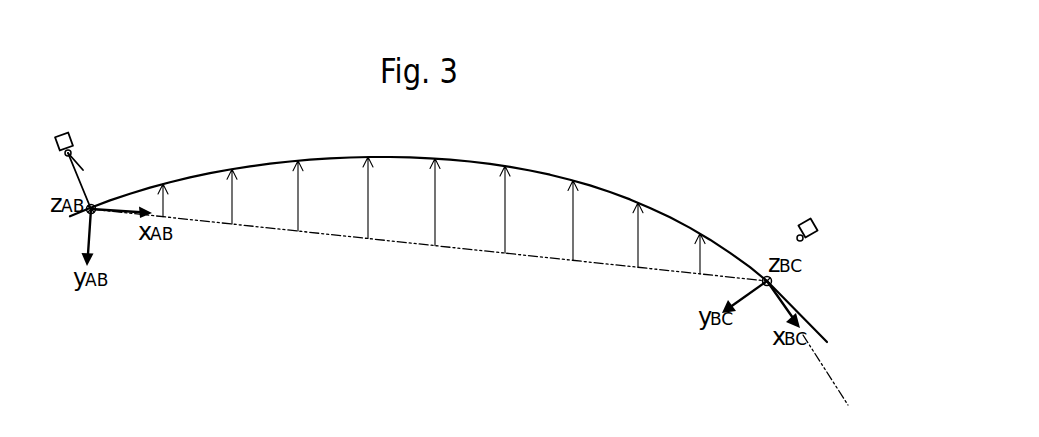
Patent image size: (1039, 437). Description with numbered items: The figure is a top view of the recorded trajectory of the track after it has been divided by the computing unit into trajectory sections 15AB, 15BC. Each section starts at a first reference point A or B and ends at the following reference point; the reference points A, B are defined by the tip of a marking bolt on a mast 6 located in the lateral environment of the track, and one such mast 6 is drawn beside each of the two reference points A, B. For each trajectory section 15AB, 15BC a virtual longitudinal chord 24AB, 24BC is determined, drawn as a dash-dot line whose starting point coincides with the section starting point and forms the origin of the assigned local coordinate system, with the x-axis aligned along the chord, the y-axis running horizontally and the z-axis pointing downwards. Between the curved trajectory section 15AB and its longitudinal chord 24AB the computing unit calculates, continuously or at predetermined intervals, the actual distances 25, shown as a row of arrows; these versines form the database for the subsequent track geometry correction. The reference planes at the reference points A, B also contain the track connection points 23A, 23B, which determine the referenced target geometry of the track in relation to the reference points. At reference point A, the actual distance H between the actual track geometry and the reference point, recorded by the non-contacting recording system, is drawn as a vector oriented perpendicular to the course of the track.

The mast 6 is at (65, 133).
The trajectory section 15AB is at (323, 158).
The trajectory section 15BC is at (806, 319).
The connection point 23A is at (100, 206).
The connection point 23B is at (762, 277).
The longitudinal chord 24AB is at (460, 250).
The longitudinal chord 24BC is at (828, 373).
The actual distances 25 is at (235, 213).
The reference point A is at (73, 151).
The reference point B is at (798, 235).
The horizontal actual distance H is at (81, 187).